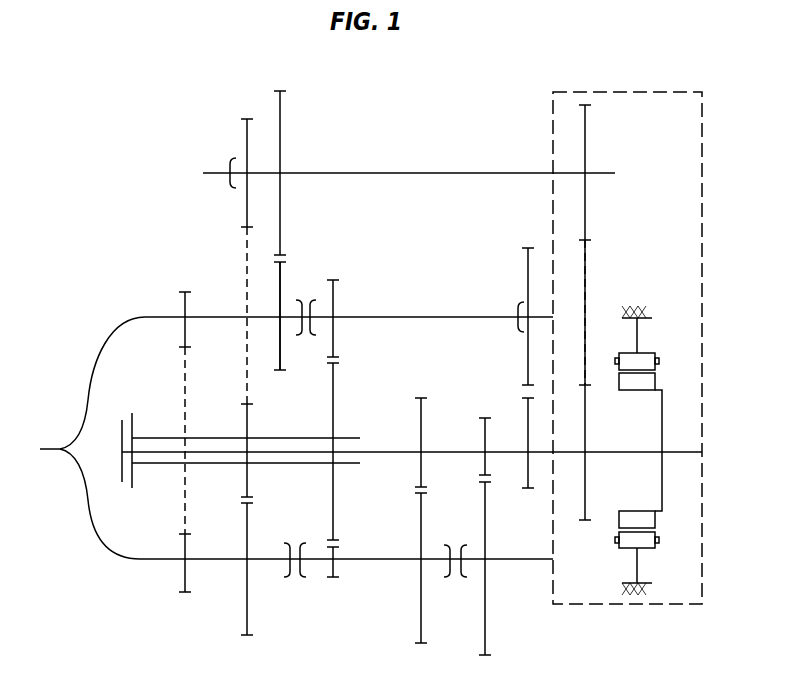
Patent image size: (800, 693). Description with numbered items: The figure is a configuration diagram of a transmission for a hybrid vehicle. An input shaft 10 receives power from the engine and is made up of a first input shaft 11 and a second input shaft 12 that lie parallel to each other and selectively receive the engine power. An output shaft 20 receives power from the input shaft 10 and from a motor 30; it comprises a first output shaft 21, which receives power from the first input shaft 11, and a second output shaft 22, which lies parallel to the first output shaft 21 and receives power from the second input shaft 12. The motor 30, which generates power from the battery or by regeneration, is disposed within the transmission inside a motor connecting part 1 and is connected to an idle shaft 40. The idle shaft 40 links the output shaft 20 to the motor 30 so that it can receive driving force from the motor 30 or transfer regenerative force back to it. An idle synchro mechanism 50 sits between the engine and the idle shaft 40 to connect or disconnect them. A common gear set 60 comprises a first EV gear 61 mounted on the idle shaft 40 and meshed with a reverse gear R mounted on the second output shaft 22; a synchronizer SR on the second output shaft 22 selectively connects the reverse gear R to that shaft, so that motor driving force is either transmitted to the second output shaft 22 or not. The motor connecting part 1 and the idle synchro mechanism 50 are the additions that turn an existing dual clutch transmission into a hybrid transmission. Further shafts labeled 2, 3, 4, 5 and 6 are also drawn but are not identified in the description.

The motor connecting part 1 is at (703, 130).
The second shaft 2 is at (247, 581).
The third shaft 3 is at (421, 562).
The fourth shaft 4 is at (333, 570).
The fifth shaft 5 is at (528, 357).
The sixth shaft 6 is at (333, 401).
The input shaft 10 is at (120, 408).
The first input shaft 11 is at (393, 450).
The second input shaft 12 is at (288, 437).
The output shaft 20 is at (77, 438).
The first output shaft 21 is at (215, 565).
The second output shaft 22 is at (217, 316).
The motor 30 is at (663, 351).
The idle shaft 40 is at (407, 172).
The idle synchro mechanism 50 is at (236, 142).
The common gear set 60 is at (290, 261).
The first EV gear 61 is at (281, 147).
The reverse gear R is at (281, 290).
The synchronizer SR is at (320, 307).